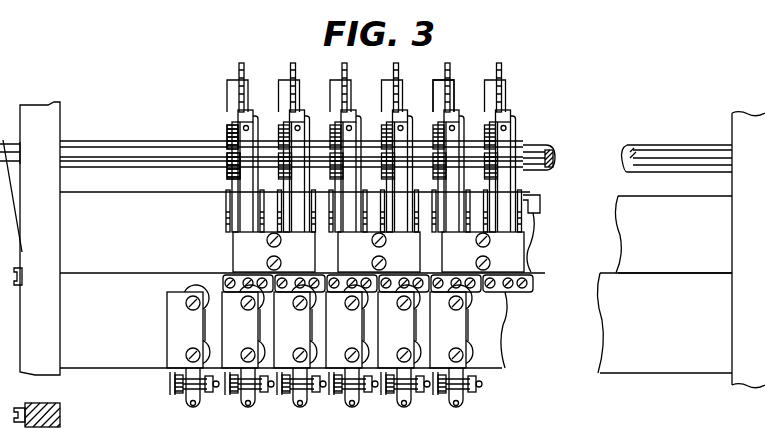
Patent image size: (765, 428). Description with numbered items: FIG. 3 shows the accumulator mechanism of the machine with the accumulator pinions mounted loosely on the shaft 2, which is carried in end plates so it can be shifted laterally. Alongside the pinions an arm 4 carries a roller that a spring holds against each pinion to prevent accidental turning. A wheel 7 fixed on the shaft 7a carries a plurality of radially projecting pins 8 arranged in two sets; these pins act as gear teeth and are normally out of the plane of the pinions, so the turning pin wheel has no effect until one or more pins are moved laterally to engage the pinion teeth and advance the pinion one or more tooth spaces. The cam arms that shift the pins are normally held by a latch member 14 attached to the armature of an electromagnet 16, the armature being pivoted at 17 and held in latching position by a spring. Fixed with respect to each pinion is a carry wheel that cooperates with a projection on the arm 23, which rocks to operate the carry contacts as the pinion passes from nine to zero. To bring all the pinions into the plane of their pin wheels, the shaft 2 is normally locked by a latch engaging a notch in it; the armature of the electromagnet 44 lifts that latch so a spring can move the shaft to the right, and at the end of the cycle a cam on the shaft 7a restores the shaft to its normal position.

The shaft 2 is at (533, 167).
The arm 4 is at (226, 182).
The wheel 7 is at (487, 96).
The shaft 7a is at (540, 148).
The pins 8 is at (502, 73).
The latch member 14 is at (464, 392).
The electromagnet 16 is at (470, 362).
The pivot 17 is at (444, 393).
The arm 23 is at (521, 118).
The electromagnet 44 is at (108, 412).